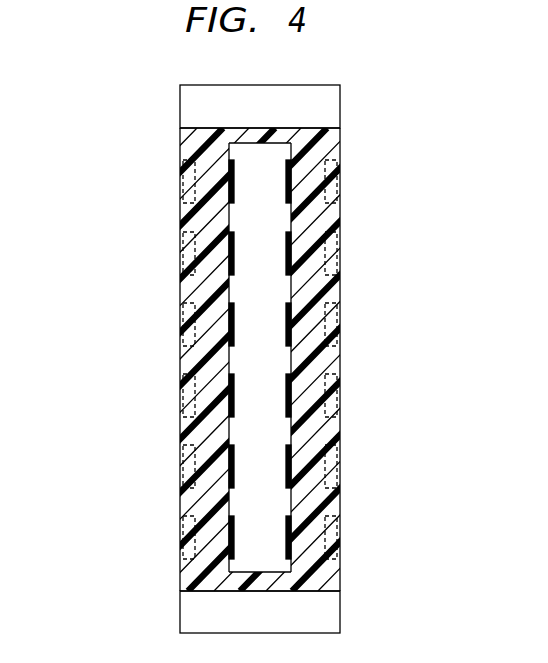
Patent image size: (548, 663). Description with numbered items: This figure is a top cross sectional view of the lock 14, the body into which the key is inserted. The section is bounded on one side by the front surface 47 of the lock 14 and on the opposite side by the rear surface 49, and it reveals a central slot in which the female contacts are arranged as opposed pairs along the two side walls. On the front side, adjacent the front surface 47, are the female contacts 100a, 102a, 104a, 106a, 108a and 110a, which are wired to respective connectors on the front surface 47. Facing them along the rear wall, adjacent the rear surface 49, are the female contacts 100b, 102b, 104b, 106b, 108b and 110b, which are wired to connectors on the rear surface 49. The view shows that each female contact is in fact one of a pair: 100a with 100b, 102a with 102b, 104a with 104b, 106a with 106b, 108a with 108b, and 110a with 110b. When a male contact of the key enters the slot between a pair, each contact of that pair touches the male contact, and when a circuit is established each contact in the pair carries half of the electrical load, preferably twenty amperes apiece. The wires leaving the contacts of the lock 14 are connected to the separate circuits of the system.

The lock 14 is at (268, 85).
The front surface 47 is at (340, 352).
The rear surface 49 is at (181, 352).
The female contact 100a is at (292, 182).
The female contact 100b is at (195, 192).
The female contact 102a is at (292, 254).
The female contact 102b is at (195, 262).
The female contact 104a is at (292, 325).
The female contact 104b is at (195, 333).
The female contact 106a is at (292, 398).
The female contact 106b is at (195, 404).
The female contact 108a is at (292, 469).
The female contact 108b is at (195, 477).
The female contact 110a is at (292, 540).
The female contact 110b is at (195, 549).